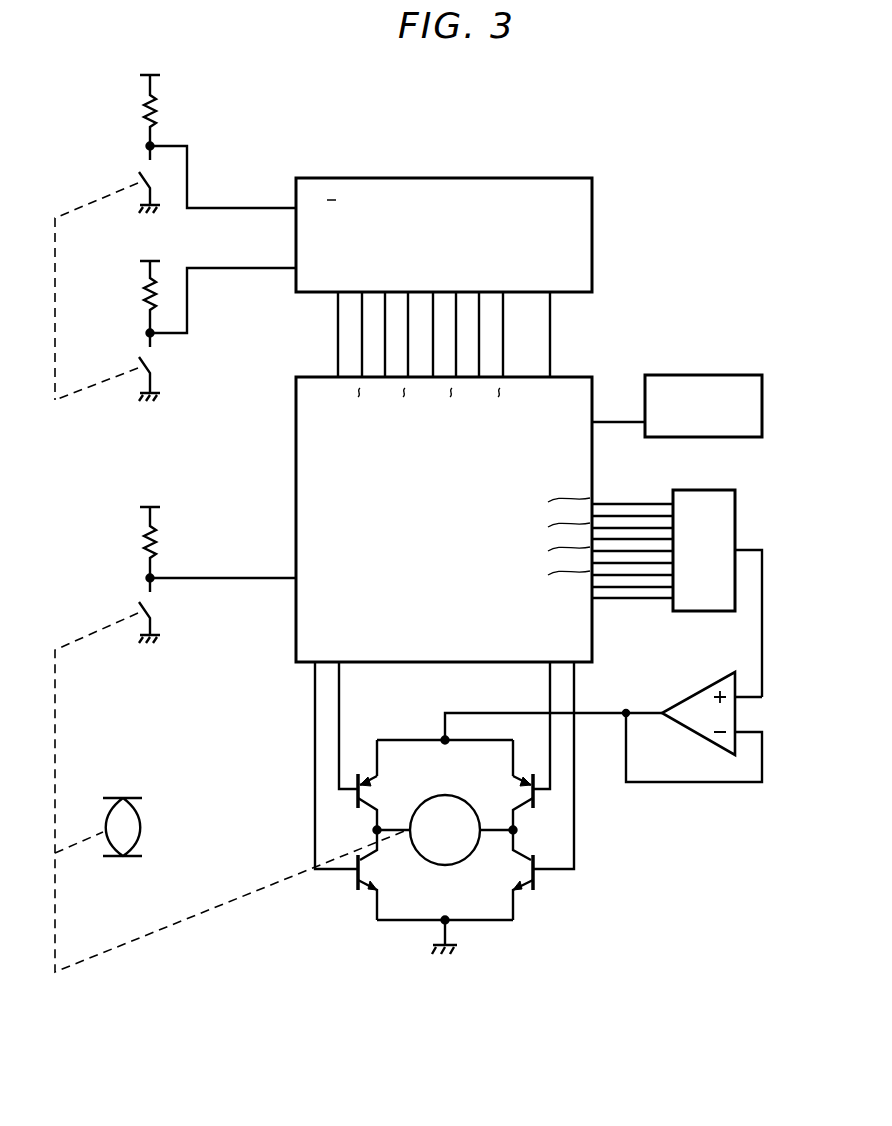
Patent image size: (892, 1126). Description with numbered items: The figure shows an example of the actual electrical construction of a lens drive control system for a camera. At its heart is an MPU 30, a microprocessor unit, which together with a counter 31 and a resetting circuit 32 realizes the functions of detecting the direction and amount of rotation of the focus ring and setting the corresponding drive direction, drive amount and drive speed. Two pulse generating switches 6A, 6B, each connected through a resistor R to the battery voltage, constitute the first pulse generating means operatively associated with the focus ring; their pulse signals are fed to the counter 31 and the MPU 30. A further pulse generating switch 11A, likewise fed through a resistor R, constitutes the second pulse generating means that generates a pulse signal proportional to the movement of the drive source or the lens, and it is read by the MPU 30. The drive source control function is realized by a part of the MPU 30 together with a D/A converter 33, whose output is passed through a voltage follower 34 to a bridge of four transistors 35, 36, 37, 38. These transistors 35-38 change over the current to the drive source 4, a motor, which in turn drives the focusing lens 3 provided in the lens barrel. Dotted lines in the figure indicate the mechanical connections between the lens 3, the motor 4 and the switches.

The focusing lens 3 is at (141, 826).
The drive source 4 is at (435, 866).
The pulse generating switch 6A is at (139, 172).
The pulse generating switch 6B is at (139, 357).
The pulse generating switch 11A is at (139, 602).
The resistor R is at (143, 114).
The MPU 30 is at (294, 420).
The counter 31 is at (594, 228).
The resetting circuit 32 is at (722, 375).
The D/A converter 33 is at (738, 506).
The voltage follower 34 is at (697, 690).
The transistor 35 is at (522, 801).
The transistor 36 is at (533, 884).
The transistor 37 is at (368, 801).
The transistor 38 is at (358, 884).